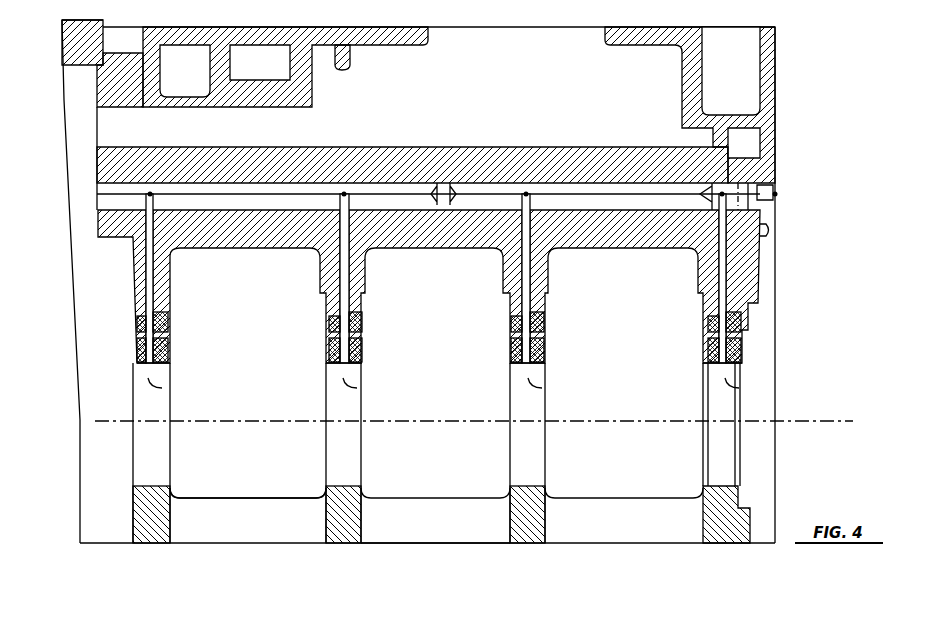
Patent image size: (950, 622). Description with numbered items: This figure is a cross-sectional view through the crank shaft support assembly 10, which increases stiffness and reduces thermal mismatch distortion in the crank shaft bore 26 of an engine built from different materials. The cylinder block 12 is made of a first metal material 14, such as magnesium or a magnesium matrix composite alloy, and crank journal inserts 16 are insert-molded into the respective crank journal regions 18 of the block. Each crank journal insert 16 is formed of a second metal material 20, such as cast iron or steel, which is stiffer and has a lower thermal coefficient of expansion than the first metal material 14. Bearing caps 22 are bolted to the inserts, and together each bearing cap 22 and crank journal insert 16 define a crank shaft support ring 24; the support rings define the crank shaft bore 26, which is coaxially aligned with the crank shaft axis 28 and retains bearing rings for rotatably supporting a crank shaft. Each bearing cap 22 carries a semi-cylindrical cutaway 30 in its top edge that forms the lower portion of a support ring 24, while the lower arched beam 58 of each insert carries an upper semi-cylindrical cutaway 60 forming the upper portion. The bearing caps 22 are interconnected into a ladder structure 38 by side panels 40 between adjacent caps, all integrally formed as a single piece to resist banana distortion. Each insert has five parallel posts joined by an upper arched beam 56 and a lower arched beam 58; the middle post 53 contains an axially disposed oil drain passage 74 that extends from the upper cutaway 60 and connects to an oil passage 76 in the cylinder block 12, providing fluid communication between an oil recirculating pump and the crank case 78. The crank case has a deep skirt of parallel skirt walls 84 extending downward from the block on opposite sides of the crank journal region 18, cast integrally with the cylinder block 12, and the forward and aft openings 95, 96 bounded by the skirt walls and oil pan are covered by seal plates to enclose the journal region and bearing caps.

The crank shaft support assembly 10 is at (800, 181).
The cylinder block 12 is at (772, 45).
The first metal material 14 is at (768, 90).
The crank journal insert 16 is at (170, 346).
The crank journal region 18 is at (170, 250).
The second metal material 20 is at (165, 356).
The bearing cap 22 is at (324, 511).
The crank shaft support ring 24 is at (327, 455).
The crank shaft bore 26 is at (248, 493).
The crank shaft axis 28 is at (410, 420).
The semi-cylindrical cutaway 30 is at (155, 445).
The ladder structure 38 is at (440, 532).
The side panel 40 is at (268, 535).
The middle post 53 is at (163, 332).
The upper arched beam 56 is at (140, 322).
The lower arched beam 58 is at (132, 358).
The upper semi-cylindrical cutaway 60 is at (148, 378).
The oil drain passage 74 is at (150, 338).
The oil passage 76 is at (135, 238).
The crank case 78 is at (160, 402).
The skirt wall 84 is at (253, 331).
The forward opening 95 is at (128, 243).
The aft opening 96 is at (769, 232).